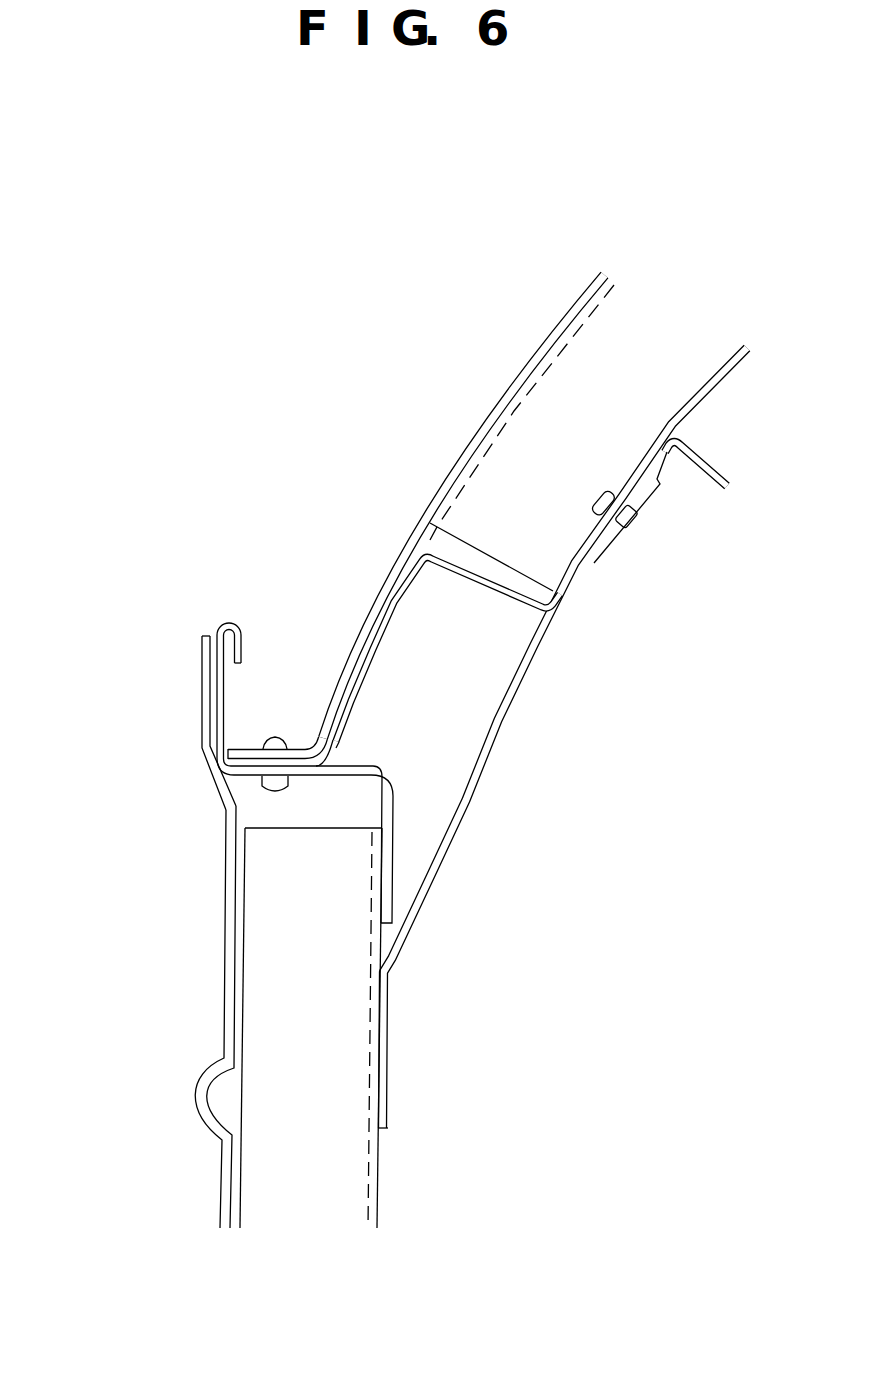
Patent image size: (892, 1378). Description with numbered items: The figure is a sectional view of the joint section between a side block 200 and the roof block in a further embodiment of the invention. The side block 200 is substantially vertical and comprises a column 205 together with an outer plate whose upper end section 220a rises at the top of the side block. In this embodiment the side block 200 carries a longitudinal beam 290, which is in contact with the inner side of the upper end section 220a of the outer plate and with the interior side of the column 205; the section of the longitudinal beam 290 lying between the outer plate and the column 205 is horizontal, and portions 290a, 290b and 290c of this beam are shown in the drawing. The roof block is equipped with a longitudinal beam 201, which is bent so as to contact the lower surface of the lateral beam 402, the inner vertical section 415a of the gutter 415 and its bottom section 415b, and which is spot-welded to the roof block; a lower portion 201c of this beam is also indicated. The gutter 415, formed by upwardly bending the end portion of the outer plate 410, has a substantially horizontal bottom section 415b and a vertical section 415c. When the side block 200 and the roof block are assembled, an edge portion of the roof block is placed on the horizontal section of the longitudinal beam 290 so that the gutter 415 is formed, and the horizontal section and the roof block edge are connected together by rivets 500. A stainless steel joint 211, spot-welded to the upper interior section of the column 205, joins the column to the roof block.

The lateral beam 402 is at (531, 488).
The outer plate 410 is at (503, 400).
The joint 211 is at (465, 820).
The longitudinal beam 201 is at (402, 607).
The lower end portion of side member 201c is at (358, 690).
The gutter 415 is at (311, 627).
The inner vertical section 415a is at (392, 580).
The bottom section 415b is at (230, 745).
The vertical section 415c is at (250, 778).
The longitudinal beam 290 is at (310, 721).
The hook portion of bracket 290a is at (207, 665).
The horizontal portion of bracket 290b is at (323, 776).
The vertical portion of bracket 290c is at (395, 885).
The side block 200 is at (135, 932).
The upper end section 220a is at (203, 697).
The column 205 is at (313, 1185).
The rivet 500 is at (275, 745).